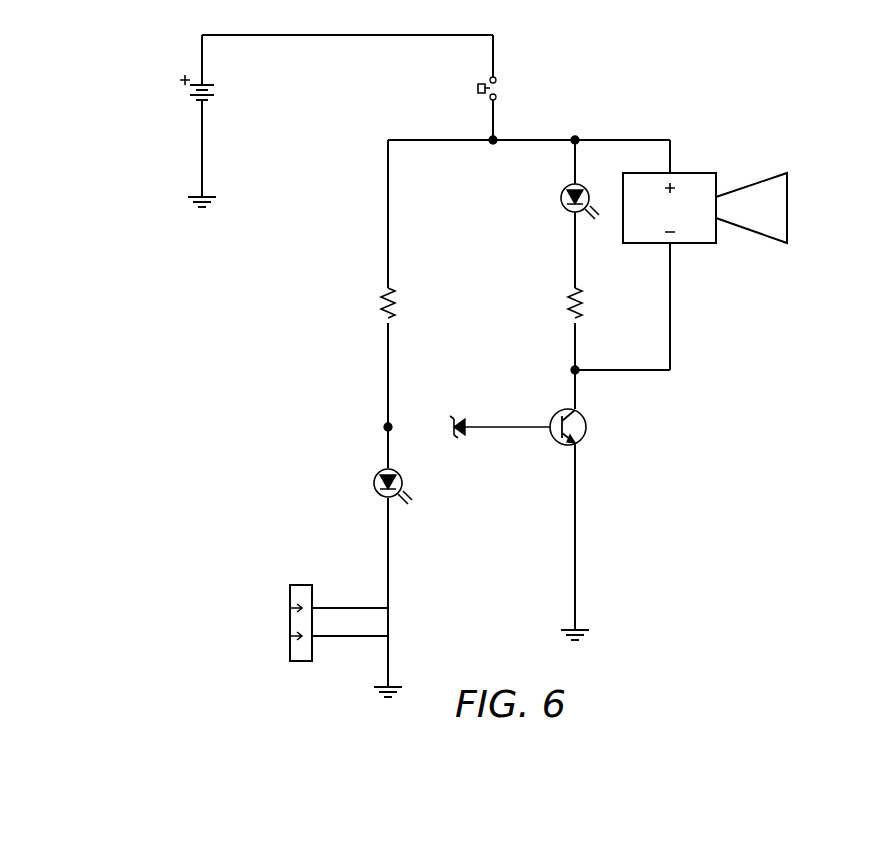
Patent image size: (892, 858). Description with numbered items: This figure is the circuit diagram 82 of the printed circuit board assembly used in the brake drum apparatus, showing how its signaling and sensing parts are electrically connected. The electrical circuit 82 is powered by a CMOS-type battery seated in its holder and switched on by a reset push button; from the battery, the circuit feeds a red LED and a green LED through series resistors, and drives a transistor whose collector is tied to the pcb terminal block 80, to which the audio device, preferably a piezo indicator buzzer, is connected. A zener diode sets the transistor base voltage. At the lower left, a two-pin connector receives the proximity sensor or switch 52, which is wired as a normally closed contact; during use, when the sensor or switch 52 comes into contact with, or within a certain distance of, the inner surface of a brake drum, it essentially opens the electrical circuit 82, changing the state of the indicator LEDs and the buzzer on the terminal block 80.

The pcb terminal block 80 is at (711, 125).
The circuit diagram 82 is at (122, 378).
The sensor or switch 52 is at (191, 598).